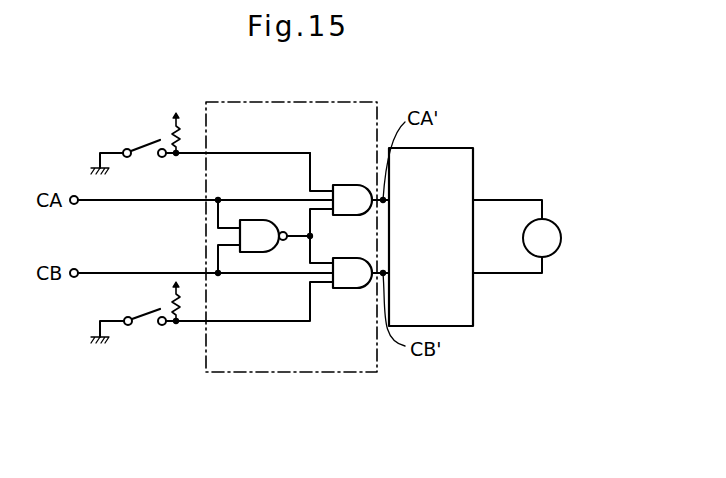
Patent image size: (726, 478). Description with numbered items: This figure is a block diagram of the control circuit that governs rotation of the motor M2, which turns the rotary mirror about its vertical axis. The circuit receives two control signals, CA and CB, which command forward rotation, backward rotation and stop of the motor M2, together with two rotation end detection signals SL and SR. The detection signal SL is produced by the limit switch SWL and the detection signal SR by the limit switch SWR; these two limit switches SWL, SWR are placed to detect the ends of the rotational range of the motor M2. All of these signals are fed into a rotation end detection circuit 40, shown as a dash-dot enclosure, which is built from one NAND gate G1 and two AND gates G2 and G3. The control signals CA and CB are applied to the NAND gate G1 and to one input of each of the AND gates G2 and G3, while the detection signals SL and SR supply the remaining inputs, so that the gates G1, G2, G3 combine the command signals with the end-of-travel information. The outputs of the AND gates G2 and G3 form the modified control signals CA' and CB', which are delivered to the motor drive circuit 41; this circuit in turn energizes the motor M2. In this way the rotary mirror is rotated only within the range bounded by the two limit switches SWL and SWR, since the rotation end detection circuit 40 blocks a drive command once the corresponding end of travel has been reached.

The rotation end detection circuit 40 is at (377, 358).
The motor drive circuit 41 is at (473, 315).
The NAND gate G1 is at (276, 230).
The AND gate G2 is at (349, 212).
The AND gate G3 is at (361, 261).
The motor M2 is at (538, 236).
The limit switch SWL is at (200, 143).
The limit switch SWR is at (135, 321).
The rotation end detection signal SL is at (233, 153).
The rotation end detection signal SR is at (255, 320).